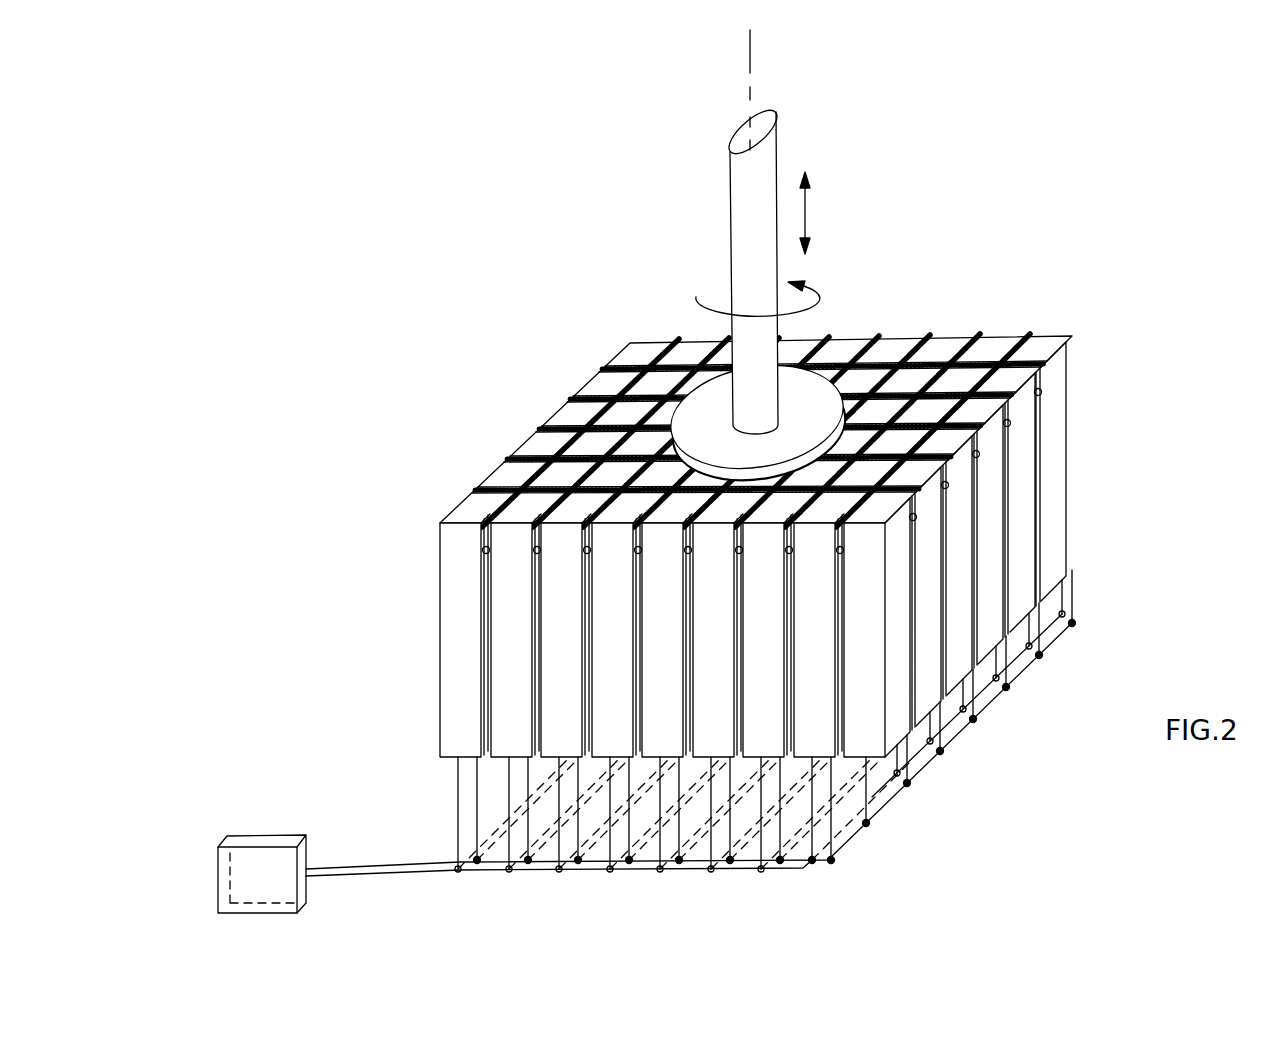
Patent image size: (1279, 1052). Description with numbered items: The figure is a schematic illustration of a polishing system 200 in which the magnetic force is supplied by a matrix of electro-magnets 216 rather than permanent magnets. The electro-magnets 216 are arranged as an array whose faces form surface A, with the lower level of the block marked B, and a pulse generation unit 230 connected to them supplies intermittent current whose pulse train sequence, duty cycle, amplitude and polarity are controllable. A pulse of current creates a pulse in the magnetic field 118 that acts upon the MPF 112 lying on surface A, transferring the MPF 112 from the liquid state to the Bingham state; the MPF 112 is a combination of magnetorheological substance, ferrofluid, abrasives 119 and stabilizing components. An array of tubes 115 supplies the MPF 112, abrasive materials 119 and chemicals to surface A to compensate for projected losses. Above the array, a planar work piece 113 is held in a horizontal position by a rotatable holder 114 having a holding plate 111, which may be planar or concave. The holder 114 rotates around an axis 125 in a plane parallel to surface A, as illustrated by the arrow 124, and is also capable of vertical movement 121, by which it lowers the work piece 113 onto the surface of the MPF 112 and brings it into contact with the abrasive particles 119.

The polishing system 200 is at (665, 471).
The holding plate 111 is at (808, 398).
The MPF 112 is at (511, 462).
The planar work piece 113 is at (908, 398).
The rotatable holder 114 is at (720, 222).
The array of tubes 115 is at (484, 556).
The magnetic field 118 is at (555, 430).
The abrasives 119 is at (587, 397).
The vertical movement 121 is at (829, 213).
The arrow 124 is at (781, 295).
The axis 125 is at (777, 90).
The electro-magnets 216 is at (458, 648).
The pulse generation unit 230 is at (243, 868).
The surface A is at (440, 523).
The level B is at (440, 762).